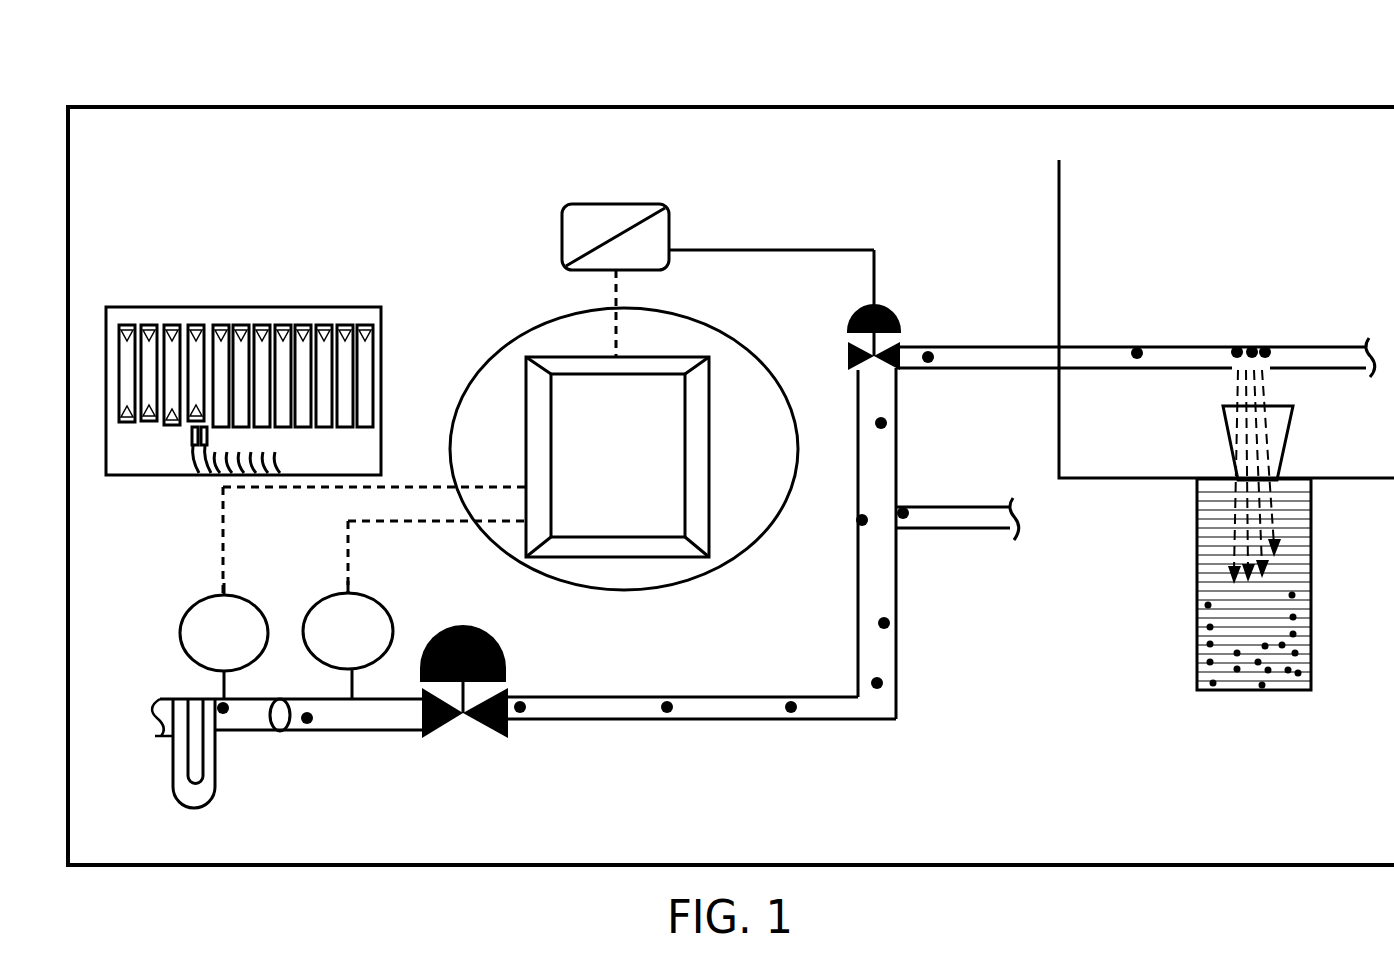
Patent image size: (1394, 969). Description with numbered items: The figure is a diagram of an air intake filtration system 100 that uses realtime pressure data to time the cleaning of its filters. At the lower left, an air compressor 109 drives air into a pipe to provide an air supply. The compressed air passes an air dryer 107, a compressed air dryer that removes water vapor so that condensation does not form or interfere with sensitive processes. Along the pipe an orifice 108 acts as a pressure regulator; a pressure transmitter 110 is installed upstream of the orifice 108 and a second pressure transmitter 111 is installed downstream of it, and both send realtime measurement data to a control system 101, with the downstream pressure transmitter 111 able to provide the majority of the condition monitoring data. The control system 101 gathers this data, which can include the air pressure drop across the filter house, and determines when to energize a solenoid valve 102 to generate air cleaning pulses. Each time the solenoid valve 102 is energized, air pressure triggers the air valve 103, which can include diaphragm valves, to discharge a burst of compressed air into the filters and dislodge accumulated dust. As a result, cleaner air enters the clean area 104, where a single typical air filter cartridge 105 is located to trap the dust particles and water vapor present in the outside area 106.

The air intake filtration system 100 is at (798, 80).
The control system 101 is at (510, 432).
The solenoid valve 102 is at (630, 202).
The air valve 103 is at (908, 468).
The clean area 104 is at (1145, 319).
The air filter cartridge 105 is at (1255, 564).
The outside area 106 is at (1063, 648).
The air dryer 107 is at (208, 775).
The orifice 108 is at (290, 736).
The air compressor 109 is at (130, 698).
The pressure transmitter 110 is at (224, 641).
The pressure transmitter 111 is at (348, 640).